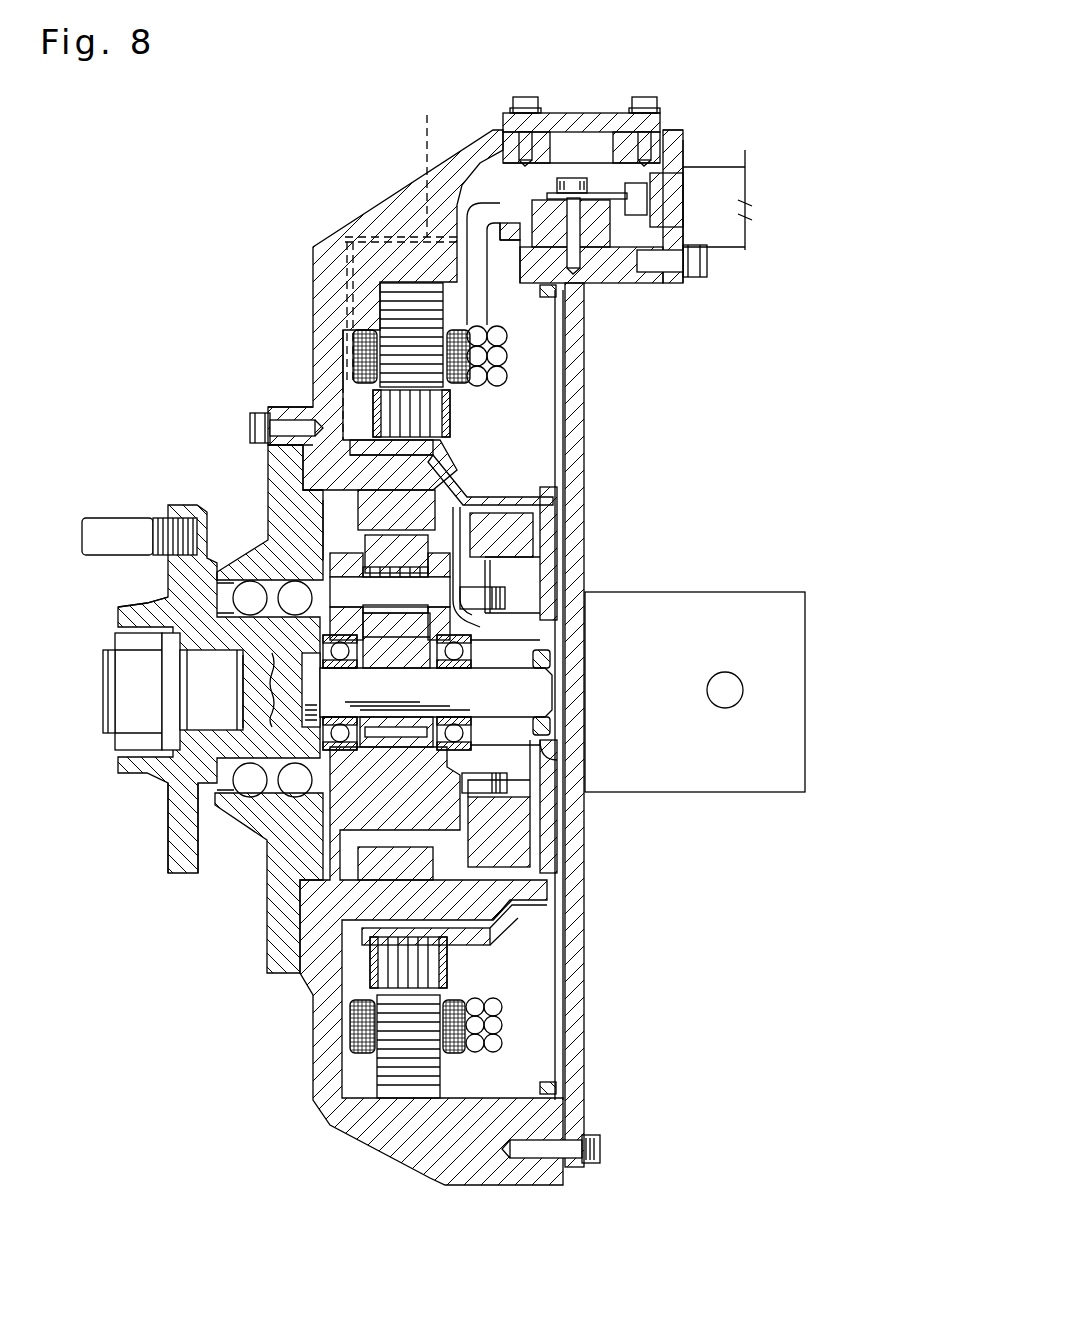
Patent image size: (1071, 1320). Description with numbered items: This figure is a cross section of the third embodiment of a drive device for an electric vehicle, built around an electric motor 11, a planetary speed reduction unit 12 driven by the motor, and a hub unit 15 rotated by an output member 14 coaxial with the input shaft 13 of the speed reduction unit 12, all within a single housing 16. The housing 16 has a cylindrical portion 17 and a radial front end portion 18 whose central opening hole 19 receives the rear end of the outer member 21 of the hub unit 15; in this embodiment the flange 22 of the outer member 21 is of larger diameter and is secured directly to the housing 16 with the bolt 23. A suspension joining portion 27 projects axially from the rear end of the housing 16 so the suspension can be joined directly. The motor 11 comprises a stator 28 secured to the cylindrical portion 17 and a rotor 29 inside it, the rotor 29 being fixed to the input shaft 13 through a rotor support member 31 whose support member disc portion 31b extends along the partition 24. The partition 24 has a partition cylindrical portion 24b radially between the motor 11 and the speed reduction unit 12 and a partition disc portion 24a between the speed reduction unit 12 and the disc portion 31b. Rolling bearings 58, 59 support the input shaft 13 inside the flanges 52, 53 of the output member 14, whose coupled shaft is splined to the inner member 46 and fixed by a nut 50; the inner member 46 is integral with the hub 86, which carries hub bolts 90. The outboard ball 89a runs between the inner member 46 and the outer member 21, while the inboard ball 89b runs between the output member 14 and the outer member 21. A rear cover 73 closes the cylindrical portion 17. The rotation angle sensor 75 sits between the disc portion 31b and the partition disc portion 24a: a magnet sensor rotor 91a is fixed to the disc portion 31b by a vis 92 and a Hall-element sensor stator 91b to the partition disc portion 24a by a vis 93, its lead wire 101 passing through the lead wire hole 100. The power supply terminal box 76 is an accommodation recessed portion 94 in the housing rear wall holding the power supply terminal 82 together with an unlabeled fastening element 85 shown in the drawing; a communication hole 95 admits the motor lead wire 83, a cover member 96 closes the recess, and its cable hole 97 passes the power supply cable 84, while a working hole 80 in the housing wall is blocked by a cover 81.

The electric motor 11 is at (508, 357).
The speed reduction unit 12 is at (444, 540).
The input shaft 13 is at (542, 692).
The output member 14 is at (165, 790).
The hub unit 15 is at (165, 800).
The housing 16 is at (463, 135).
The cylindrical portion 17 is at (395, 255).
The front end portion 18 is at (340, 378).
The opening hole 19 is at (300, 490).
The outer member 21 is at (247, 562).
The flange 22 is at (290, 404).
The bolt 23 is at (258, 415).
The partition 24 is at (470, 484).
The partition disc portion 24a is at (462, 855).
The partition cylindrical portion 24b is at (423, 478).
The suspension joining portion 27 is at (760, 604).
The stator 28 is at (392, 297).
The rotor 29 is at (347, 356).
The rotor support member 31 is at (512, 446).
The support member disc portion 31b is at (549, 775).
The inner member 46 is at (210, 632).
The nut 50 is at (135, 688).
The flange 52 is at (307, 503).
The flange 53 is at (437, 573).
The rolling bearing 58 is at (268, 718).
The rolling bearing 59 is at (472, 733).
The rear cover 73 is at (584, 1053).
The rotation angle sensor 75 is at (518, 874).
The power supply terminal box 76 is at (688, 128).
The working hole 80 is at (598, 150).
The cover 81 is at (629, 133).
The power supply terminal 82 is at (598, 243).
The lead wire 83 is at (482, 210).
The power supply cable 84 is at (742, 222).
The bolt 85 is at (573, 178).
The hub 86 is at (180, 608).
The ball 89a is at (248, 794).
The ball 89b is at (292, 794).
The hub bolt 90 is at (128, 525).
The sensor rotor 91a is at (548, 845).
The sensor stator 91b is at (527, 860).
The vis 92 is at (545, 800).
The vis 93 is at (460, 838).
The accommodation recessed portion 94 is at (667, 160).
The communication hole 95 is at (522, 278).
The cover member 96 is at (681, 140).
The cable hole 97 is at (700, 192).
The lead wire hole 100 is at (402, 236).
The lead wire 101 is at (350, 388).